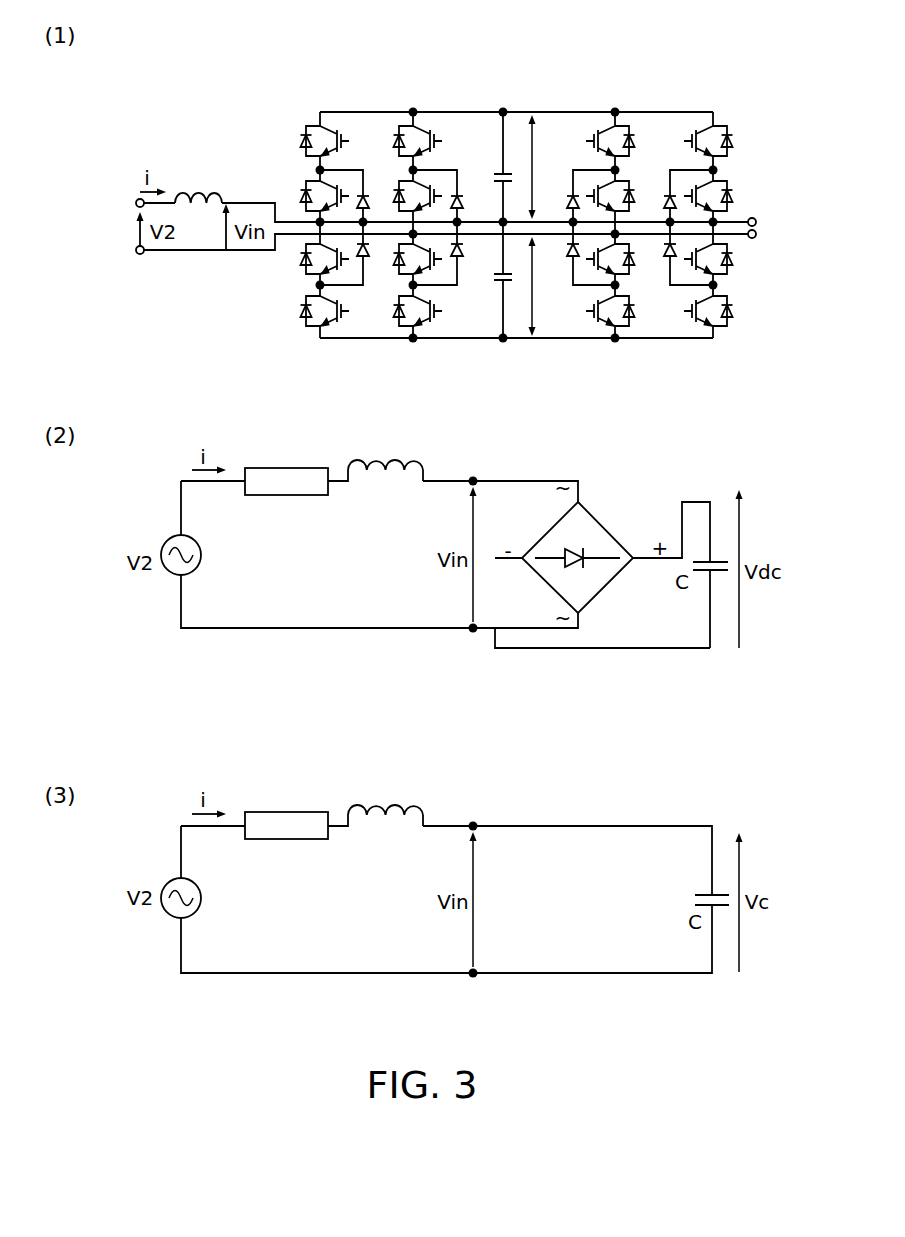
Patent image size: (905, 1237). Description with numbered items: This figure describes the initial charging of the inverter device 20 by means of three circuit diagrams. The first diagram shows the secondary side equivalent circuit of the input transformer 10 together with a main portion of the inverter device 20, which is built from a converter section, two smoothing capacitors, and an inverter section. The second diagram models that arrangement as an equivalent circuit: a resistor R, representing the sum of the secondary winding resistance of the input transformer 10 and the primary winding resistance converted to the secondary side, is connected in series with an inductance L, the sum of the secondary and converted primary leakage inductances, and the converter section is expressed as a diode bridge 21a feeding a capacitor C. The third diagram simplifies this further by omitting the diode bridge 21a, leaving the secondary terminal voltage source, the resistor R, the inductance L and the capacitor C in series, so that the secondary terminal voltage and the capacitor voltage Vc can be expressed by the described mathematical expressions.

The input transformer 10 is at (200, 188).
The inverter device 20 is at (494, 98).
The diode bridge 21a is at (584, 508).